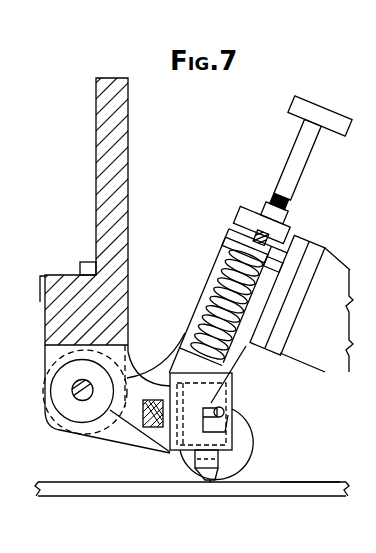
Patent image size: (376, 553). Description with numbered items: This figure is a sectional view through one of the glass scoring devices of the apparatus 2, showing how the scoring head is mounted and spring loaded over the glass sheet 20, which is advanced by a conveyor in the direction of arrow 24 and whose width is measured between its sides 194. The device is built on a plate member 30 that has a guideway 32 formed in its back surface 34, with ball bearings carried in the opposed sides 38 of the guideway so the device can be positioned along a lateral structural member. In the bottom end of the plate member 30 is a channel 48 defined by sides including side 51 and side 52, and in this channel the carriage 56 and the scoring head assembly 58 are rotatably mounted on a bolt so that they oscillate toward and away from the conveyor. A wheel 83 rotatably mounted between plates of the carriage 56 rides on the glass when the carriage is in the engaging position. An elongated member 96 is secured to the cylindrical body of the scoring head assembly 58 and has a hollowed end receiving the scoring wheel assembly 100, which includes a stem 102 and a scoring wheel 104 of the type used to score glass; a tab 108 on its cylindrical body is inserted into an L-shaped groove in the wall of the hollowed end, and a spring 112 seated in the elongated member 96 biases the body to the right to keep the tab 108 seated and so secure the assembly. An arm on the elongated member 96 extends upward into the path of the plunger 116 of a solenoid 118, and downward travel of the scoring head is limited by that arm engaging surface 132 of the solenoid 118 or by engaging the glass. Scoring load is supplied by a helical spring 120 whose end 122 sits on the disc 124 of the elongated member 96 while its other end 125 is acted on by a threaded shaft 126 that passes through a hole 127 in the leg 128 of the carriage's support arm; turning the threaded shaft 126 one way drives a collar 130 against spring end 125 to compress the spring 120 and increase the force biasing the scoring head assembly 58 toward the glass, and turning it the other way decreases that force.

The apparatus 2 is at (332, 182).
The glass sheet 20 is at (308, 470).
The arrow 24 is at (59, 457).
The plate member 30 is at (114, 78).
The guideway 32 is at (62, 273).
The back surface 34 is at (55, 278).
The opposed sides 38 is at (77, 270).
The channel 48 is at (108, 336).
The side 51 is at (128, 345).
The side 52 is at (126, 356).
The carriage 56 is at (80, 396).
The scoring head assembly 58 is at (246, 391).
The wheel 83 is at (246, 447).
The elongated member 96 is at (140, 447).
The scoring wheel assembly 100 is at (240, 430).
The stem 102 is at (242, 462).
The scoring wheel 104 is at (212, 481).
The tab 108 is at (232, 412).
The spring 112 is at (142, 428).
The plunger 116 is at (267, 290).
The solenoid 118 is at (342, 339).
The helical spring 120 is at (205, 285).
The end 122 is at (187, 338).
The disc 124 is at (190, 345).
The other end 125 is at (230, 250).
The threaded shaft 126 is at (287, 153).
The hole 127 is at (290, 200).
The leg 128 is at (240, 213).
The collar 130 is at (232, 234).
The surface 132 is at (275, 263).
The sides 194 is at (270, 490).